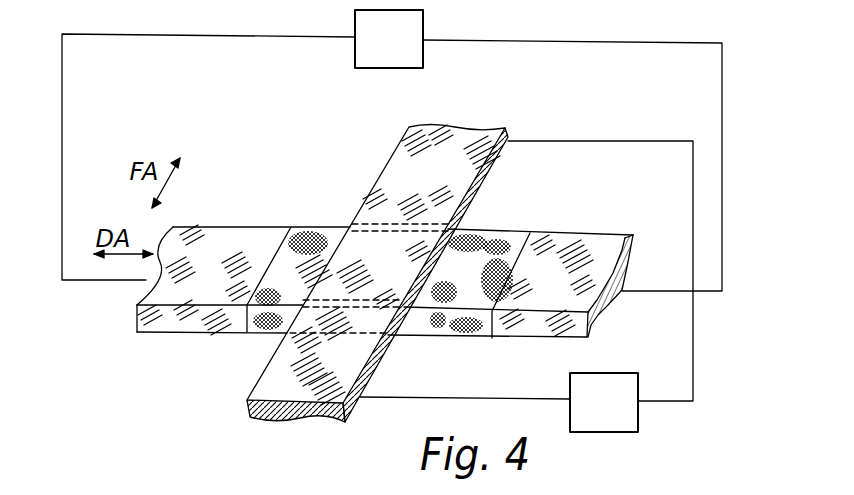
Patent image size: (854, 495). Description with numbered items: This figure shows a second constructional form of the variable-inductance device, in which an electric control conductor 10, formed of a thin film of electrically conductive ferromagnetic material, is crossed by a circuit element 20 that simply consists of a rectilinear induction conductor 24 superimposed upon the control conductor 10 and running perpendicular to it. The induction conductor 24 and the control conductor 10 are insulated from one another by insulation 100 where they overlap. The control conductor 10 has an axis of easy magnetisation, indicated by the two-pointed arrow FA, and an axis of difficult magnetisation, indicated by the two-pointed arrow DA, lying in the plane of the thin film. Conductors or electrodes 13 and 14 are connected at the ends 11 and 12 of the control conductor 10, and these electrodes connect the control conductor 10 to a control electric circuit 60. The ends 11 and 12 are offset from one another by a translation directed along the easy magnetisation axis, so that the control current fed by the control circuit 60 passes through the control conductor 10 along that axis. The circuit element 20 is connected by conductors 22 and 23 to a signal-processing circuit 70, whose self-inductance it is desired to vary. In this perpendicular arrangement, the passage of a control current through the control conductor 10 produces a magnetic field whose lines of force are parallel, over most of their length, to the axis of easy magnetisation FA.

The electric control conductor 10 is at (437, 323).
The end of the control conductor 11 is at (306, 245).
The end of the control conductor 12 is at (508, 248).
The electrode 13 is at (208, 247).
The electrode 14 is at (580, 247).
The circuit element 20 is at (328, 110).
The conductor 22 is at (283, 365).
The conductor 23 is at (400, 157).
The rectilinear induction conductor 24 is at (371, 252).
The control electric circuit 60 is at (389, 39).
The signal-processing circuit 70 is at (604, 402).
The insulation 100 is at (455, 240).